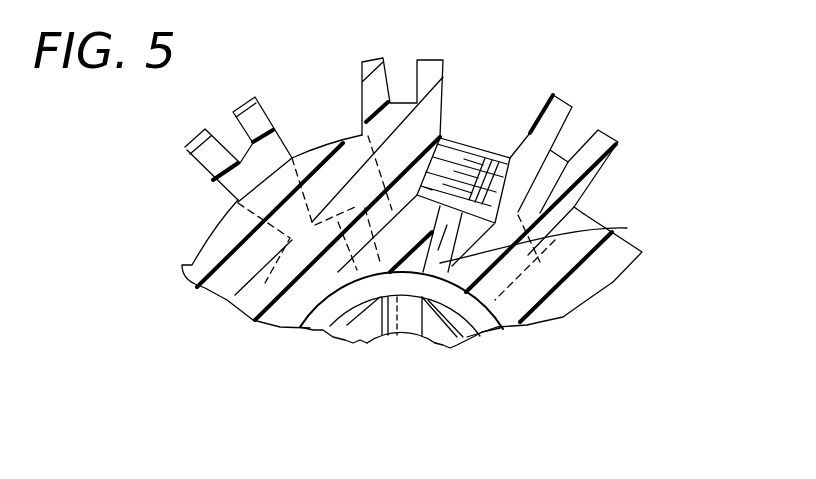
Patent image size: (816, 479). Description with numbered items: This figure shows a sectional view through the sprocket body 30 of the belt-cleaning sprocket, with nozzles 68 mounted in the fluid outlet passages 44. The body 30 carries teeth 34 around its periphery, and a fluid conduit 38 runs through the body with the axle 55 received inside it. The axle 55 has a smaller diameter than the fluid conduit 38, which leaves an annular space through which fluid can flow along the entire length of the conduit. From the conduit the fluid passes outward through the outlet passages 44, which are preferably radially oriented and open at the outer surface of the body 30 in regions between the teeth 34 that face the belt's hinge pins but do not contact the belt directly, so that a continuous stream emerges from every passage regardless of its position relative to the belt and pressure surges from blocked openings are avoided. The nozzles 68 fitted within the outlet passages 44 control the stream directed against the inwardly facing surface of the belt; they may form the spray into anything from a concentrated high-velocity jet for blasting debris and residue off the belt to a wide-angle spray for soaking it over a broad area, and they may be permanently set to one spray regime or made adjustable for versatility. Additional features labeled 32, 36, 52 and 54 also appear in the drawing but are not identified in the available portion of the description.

The body 30 is at (248, 312).
The tooth 32 is at (560, 95).
The teeth 34 is at (602, 168).
The tooth 36 is at (614, 136).
The fluid conduit 38 is at (321, 333).
The fluid outlet passages 44 is at (590, 240).
The hub bore 52 is at (397, 340).
The slot 54 is at (403, 322).
The axle 55 is at (478, 334).
The nozzles 68 is at (452, 133).